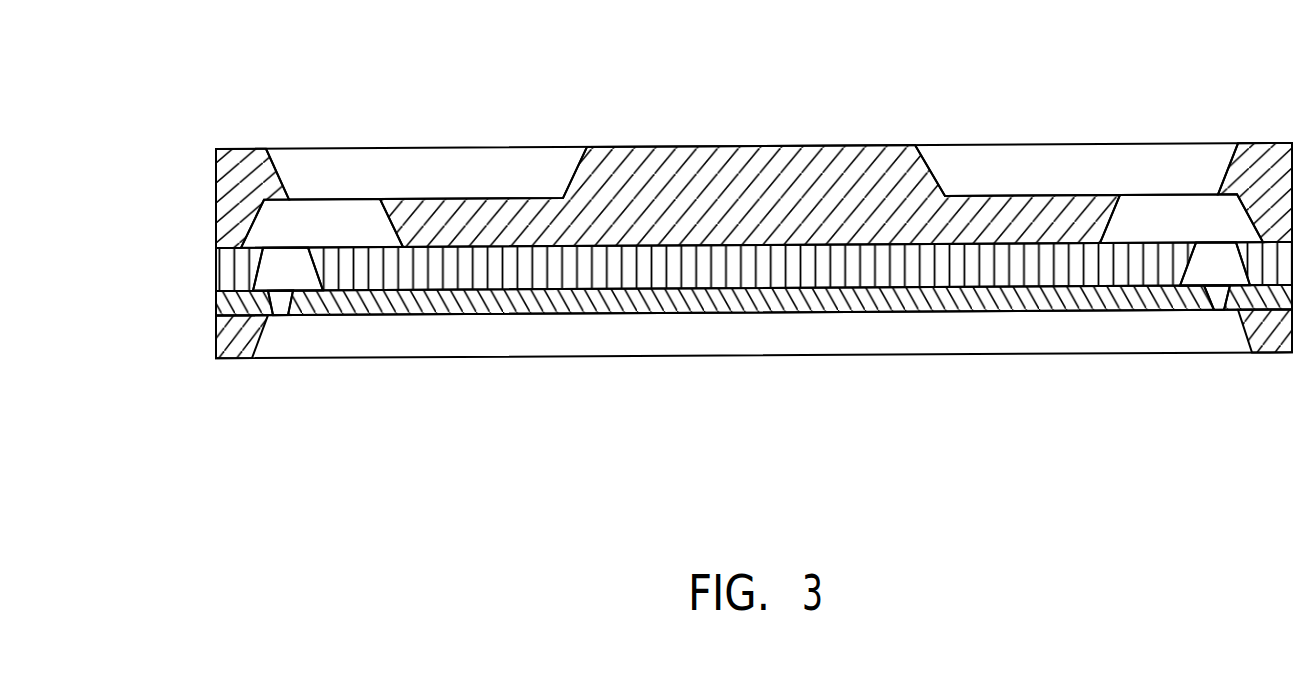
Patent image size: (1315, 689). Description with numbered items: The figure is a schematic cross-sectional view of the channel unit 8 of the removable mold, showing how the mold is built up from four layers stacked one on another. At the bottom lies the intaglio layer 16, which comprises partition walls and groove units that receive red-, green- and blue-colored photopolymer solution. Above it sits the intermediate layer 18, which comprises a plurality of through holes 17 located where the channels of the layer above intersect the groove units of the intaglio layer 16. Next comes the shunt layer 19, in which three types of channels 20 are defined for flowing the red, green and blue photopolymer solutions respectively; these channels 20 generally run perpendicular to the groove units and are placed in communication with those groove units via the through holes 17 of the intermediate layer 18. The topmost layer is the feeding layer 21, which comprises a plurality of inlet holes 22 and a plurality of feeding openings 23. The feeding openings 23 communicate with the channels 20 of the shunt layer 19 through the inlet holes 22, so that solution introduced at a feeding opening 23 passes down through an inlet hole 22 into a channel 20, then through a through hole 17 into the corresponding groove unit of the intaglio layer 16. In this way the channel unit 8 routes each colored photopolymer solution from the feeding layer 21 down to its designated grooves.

The channel unit 8 is at (785, 328).
The intaglio layer 16 is at (195, 337).
The through holes 17 is at (272, 320).
The intermediate layer 18 is at (192, 298).
The shunt layer 19 is at (192, 265).
The channels 20 is at (310, 278).
The feeding layer 21 is at (192, 195).
The inlet holes 22 is at (320, 237).
The feeding openings 23 is at (995, 159).